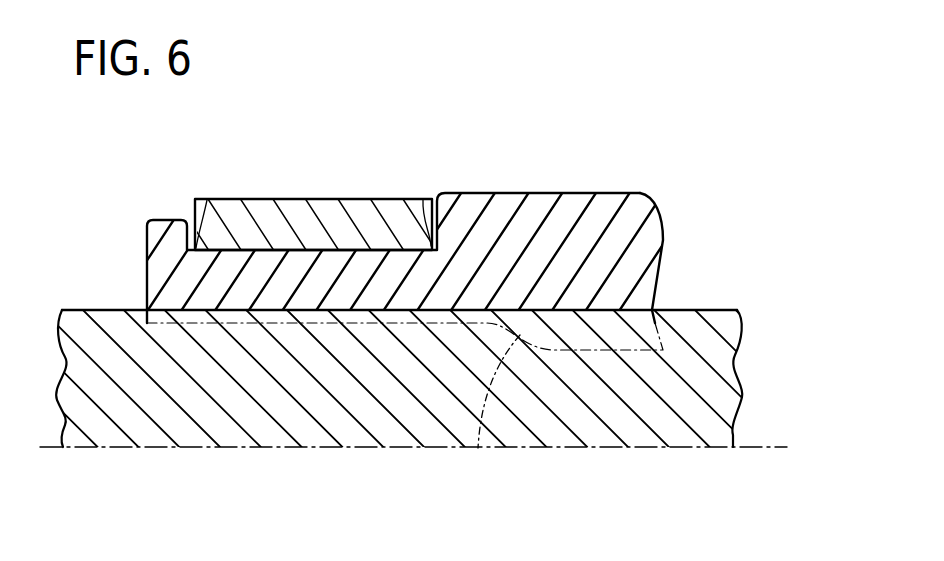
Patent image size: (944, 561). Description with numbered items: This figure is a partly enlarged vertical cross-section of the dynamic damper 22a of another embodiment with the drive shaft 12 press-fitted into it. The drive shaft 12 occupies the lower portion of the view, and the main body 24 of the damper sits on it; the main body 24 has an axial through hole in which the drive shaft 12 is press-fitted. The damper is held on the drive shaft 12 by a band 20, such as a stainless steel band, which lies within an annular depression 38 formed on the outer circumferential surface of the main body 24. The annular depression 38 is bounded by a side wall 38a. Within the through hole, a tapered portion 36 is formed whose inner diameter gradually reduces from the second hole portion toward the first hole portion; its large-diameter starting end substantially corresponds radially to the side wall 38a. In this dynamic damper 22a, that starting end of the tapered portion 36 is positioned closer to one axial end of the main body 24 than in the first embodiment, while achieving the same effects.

The drive shaft 12 is at (700, 385).
The band 20 is at (290, 230).
The dynamic damper 22a is at (613, 190).
The main body 24 is at (637, 256).
The tapered portion 36 is at (478, 448).
The annular depression 38 is at (207, 203).
The side wall 38a is at (423, 200).